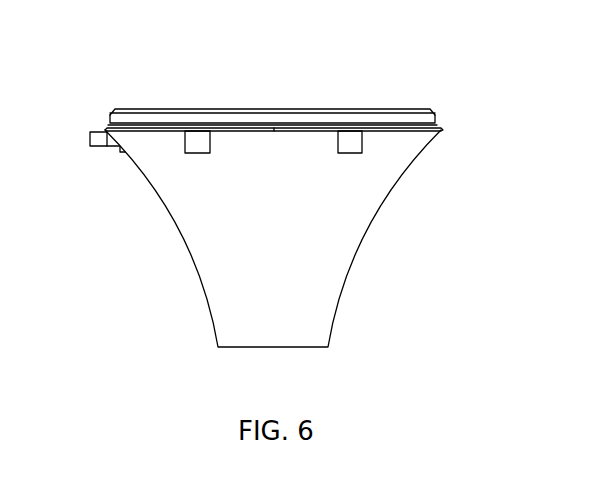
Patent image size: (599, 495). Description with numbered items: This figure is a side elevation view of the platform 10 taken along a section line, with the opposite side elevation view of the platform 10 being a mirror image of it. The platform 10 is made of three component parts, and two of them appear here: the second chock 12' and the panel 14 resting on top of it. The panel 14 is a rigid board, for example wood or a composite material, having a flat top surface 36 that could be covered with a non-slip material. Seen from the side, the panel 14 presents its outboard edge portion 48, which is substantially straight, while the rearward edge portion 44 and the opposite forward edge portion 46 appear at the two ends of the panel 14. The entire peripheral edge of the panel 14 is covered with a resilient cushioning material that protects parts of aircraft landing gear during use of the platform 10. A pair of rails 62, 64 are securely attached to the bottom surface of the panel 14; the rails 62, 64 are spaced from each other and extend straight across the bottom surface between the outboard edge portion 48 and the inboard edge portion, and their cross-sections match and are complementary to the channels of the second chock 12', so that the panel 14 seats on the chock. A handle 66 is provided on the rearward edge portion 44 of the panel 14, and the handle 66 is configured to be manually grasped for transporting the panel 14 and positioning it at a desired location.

The platform 10 is at (428, 50).
The second chock 12' is at (272, 238).
The panel 14 is at (282, 106).
The top surface 36 is at (352, 108).
The outboard edge portion 48 is at (212, 120).
The rearward edge portion 44 is at (166, 118).
The forward edge portion 46 is at (383, 120).
The rail 62 is at (187, 155).
The rail 64 is at (360, 155).
The handle 66 is at (81, 139).